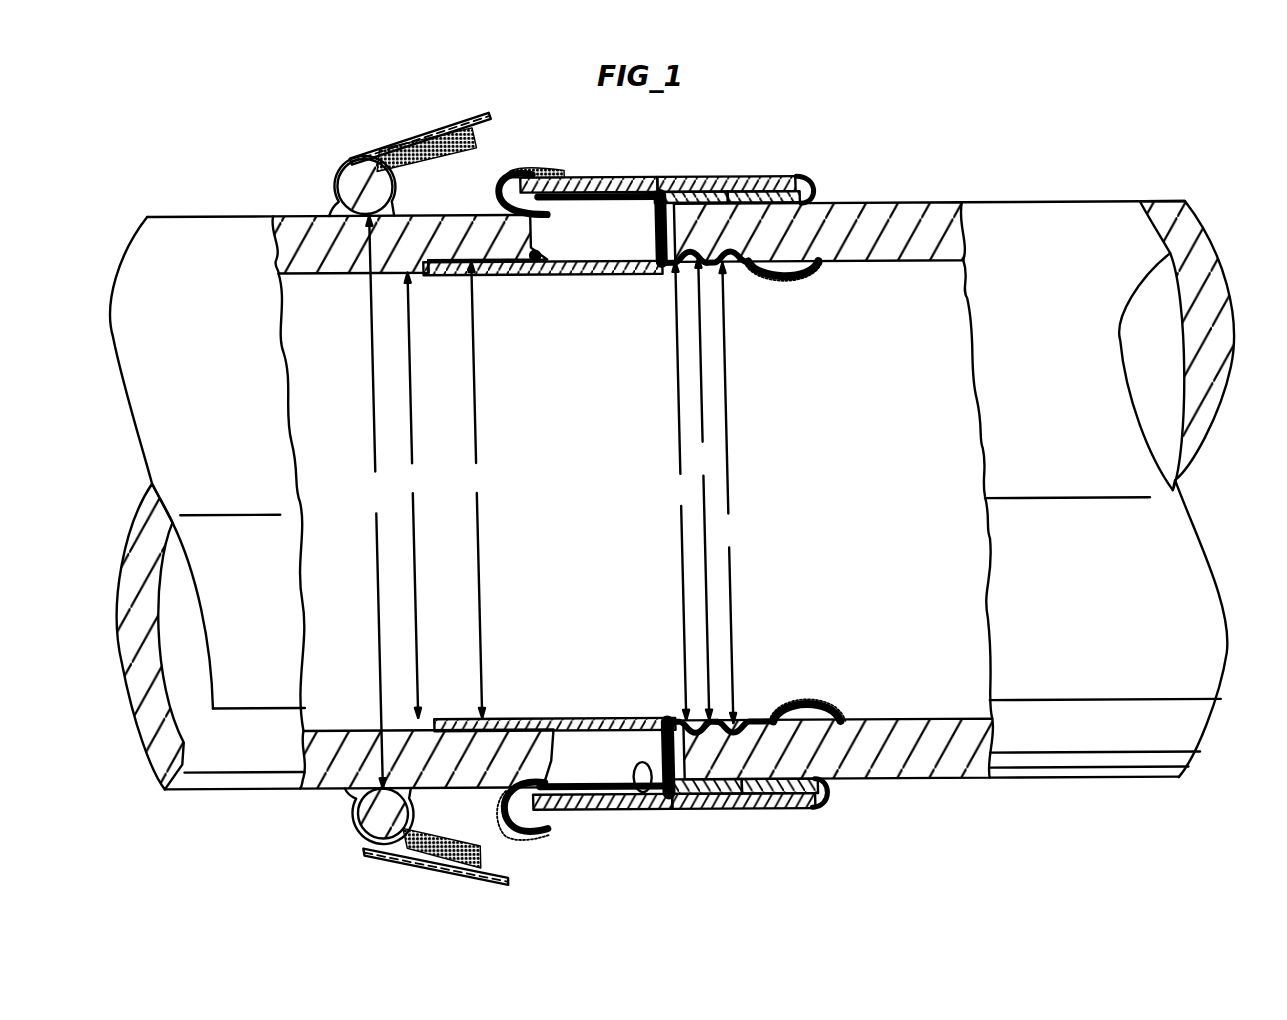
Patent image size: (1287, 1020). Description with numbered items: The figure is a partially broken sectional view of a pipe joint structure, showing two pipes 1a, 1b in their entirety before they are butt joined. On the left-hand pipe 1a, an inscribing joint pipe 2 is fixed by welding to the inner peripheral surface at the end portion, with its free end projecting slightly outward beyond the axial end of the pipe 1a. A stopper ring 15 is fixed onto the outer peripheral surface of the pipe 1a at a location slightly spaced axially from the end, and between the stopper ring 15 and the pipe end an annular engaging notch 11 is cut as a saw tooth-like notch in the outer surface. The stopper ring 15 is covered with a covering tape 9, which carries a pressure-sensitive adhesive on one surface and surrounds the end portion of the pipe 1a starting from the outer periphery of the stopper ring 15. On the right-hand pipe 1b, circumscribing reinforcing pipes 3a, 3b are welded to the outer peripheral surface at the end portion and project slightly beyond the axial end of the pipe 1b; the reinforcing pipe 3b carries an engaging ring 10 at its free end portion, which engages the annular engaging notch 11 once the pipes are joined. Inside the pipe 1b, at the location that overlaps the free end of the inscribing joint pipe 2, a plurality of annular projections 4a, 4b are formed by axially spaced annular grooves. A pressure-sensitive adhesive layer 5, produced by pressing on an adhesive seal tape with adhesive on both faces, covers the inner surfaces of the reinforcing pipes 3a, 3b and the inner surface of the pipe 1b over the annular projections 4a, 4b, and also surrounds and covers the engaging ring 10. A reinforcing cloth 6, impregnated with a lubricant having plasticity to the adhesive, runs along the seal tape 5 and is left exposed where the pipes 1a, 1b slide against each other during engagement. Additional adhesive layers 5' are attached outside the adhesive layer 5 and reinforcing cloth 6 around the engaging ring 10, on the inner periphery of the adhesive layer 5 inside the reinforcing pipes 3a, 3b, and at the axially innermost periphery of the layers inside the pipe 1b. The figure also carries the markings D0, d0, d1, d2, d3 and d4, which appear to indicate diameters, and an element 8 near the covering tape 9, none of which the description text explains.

The pipe 1a is at (219, 216).
The pipe 1b is at (1031, 202).
The inscribing joint pipe 2 is at (575, 276).
The circumscribing reinforcing pipe 3a is at (668, 177).
The circumscribing reinforcing pipe 3b is at (774, 186).
The annular projection 4a is at (691, 195).
The annular projection 4b is at (729, 197).
The pressure-sensitive adhesive layer 5 is at (666, 497).
The additional adhesive layer 5' is at (674, 497).
The reinforcing cloth 6 is at (504, 189).
The filler material 8 is at (433, 157).
The covering tape 9 is at (441, 137).
The engaging ring 10 is at (567, 202).
The annular engaging notch 11 is at (443, 262).
The stopper ring 15 is at (359, 168).
The pipe outer diameter D0 is at (373, 502).
The pipe inner diameter d0 is at (408, 495).
The inner sleeve outer diameter d1 is at (475, 490).
The seal fold diameter d2 is at (677, 491).
The seal wave diameter d3 is at (703, 489).
The seal groove diameter d4 is at (725, 493).